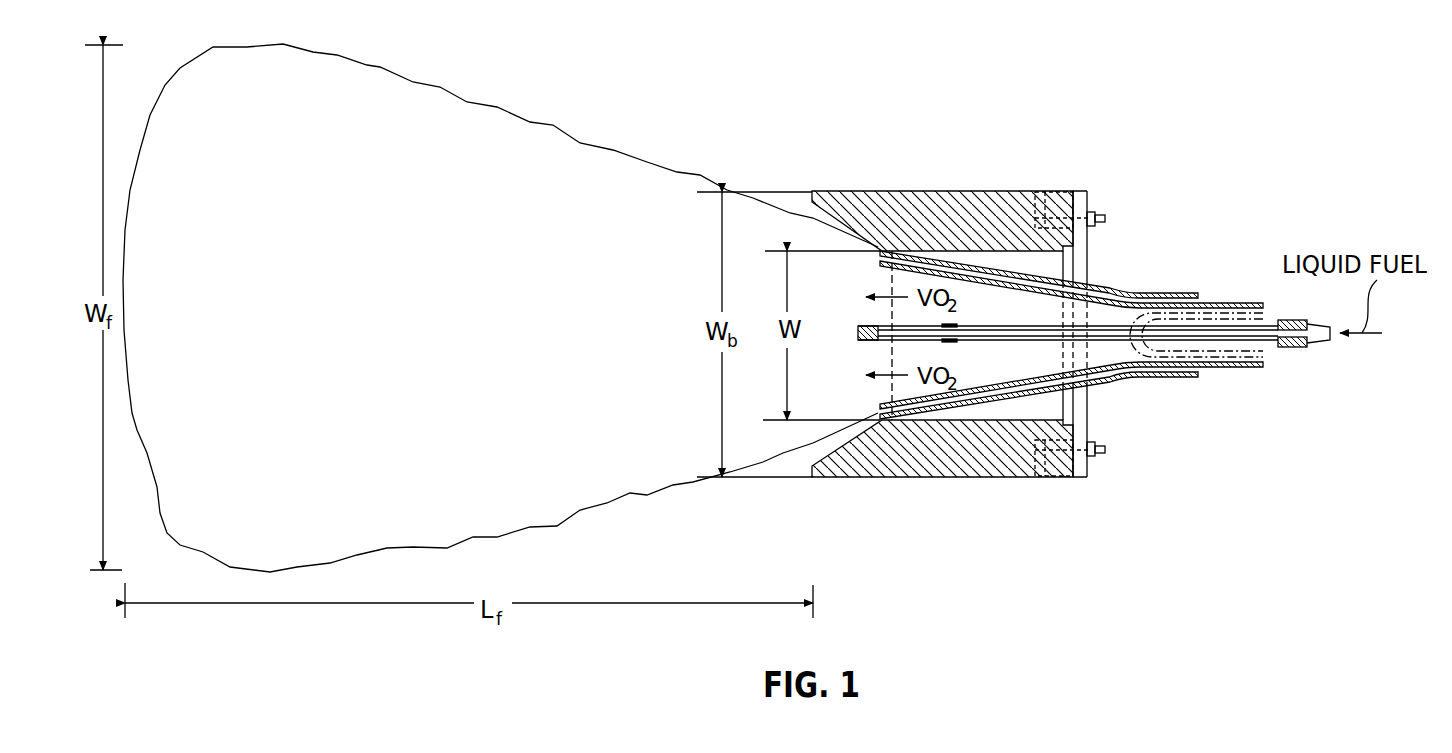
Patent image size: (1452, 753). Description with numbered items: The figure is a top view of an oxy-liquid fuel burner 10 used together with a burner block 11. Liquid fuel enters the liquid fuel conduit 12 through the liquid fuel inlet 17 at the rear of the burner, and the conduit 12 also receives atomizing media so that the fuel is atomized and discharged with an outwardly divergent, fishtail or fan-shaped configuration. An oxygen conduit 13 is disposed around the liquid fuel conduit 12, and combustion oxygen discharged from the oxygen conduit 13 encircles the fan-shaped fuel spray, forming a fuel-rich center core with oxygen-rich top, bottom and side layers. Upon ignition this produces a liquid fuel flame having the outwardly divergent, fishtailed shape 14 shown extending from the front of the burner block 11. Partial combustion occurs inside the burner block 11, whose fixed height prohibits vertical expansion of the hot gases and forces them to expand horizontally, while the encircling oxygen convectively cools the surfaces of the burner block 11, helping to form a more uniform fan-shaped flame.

The burner nozzle 10 is at (1068, 336).
The burner block 11 is at (936, 477).
The liquid fuel conduit 12 is at (1132, 328).
The oxygen conduit 13 is at (1100, 384).
The outwardly divergent, fishtailed shape 14 is at (404, 332).
The liquid fuel inlet 17 is at (1328, 341).